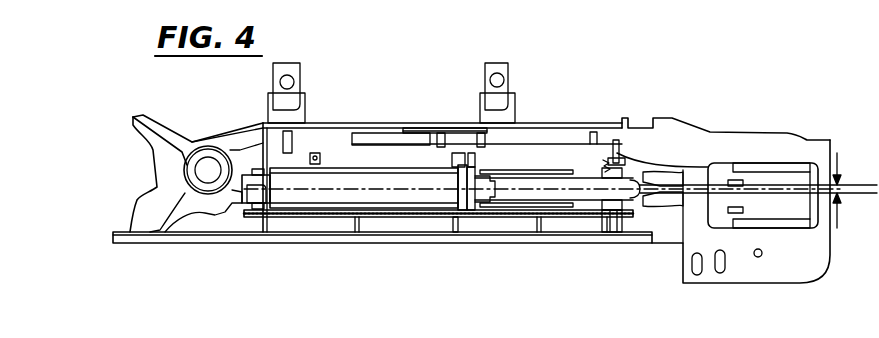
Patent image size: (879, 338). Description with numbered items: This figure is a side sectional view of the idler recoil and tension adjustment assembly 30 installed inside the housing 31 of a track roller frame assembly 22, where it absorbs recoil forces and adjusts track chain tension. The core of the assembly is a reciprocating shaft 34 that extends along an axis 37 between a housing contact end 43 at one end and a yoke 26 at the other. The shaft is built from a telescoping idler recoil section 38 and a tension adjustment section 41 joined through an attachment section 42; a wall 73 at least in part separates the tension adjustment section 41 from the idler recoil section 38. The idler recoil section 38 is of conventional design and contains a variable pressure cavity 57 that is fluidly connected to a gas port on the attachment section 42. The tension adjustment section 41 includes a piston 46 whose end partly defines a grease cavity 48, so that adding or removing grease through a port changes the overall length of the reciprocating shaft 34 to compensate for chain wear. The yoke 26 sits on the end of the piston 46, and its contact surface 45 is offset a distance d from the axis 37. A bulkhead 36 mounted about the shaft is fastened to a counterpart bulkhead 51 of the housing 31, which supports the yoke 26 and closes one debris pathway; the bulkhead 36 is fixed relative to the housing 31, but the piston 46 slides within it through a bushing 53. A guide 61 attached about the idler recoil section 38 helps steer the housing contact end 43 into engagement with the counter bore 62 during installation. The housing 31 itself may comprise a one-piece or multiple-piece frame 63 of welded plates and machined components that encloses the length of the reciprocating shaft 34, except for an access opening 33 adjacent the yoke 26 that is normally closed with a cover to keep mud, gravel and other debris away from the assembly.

The track roller frame assembly 22 is at (690, 81).
The yoke 26 is at (700, 167).
The idler recoil and tension adjustment assembly 30 is at (333, 208).
The housing 31 is at (572, 123).
The access opening 33 is at (470, 129).
The reciprocating shaft 34 is at (377, 172).
The bulkhead 36 is at (694, 188).
The axis 37 is at (838, 180).
The idler recoil section 38 is at (280, 200).
The tension adjustment section 41 is at (525, 207).
The attachment section 42 is at (467, 211).
The housing contact end 43 is at (254, 218).
The contact surface 45 is at (738, 198).
The piston 46 is at (588, 208).
The grease cavity 48 is at (480, 198).
The counterpart bulkhead 51 is at (608, 152).
The bushing 53 is at (620, 199).
The variable pressure cavity 57 is at (270, 188).
The guide 61 is at (318, 153).
The counter bore 62 is at (257, 220).
The frame 63 is at (403, 130).
The wall 73 is at (490, 178).